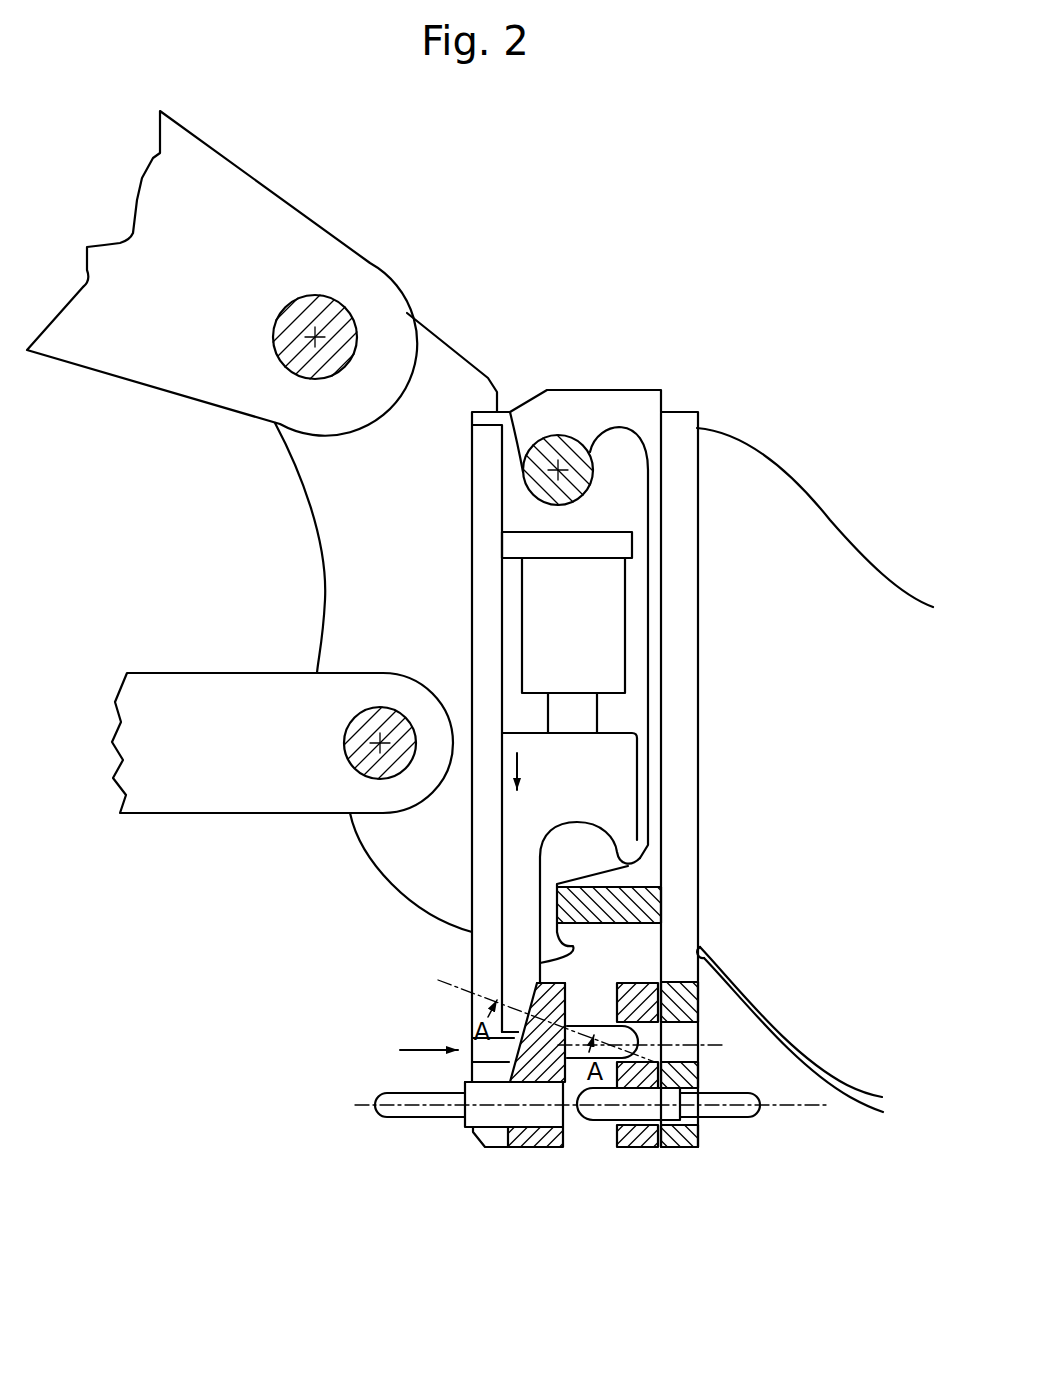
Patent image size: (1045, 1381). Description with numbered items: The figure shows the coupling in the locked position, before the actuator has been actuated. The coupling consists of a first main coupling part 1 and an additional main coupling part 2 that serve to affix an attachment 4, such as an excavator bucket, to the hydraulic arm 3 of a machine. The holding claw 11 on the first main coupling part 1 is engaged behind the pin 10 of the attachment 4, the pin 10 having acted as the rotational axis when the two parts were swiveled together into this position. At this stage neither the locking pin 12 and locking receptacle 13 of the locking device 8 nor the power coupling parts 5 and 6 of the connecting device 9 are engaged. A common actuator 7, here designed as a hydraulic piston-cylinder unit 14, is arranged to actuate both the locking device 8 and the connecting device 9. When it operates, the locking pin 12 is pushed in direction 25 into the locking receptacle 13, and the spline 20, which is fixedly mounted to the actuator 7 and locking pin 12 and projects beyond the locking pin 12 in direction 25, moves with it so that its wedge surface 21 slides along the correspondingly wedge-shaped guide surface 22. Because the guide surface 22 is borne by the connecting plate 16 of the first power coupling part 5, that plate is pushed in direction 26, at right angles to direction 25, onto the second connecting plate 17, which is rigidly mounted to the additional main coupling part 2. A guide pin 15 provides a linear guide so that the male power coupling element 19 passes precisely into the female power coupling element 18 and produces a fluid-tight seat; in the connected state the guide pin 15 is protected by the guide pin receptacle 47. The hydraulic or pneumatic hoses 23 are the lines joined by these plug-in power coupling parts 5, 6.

The first main coupling part 1 is at (480, 440).
The additional main coupling part 2 is at (650, 420).
The hydraulic arm 3 is at (357, 285).
The attachment 4 is at (845, 1047).
The first power coupling part 5 is at (487, 1158).
The second power coupling part 6 is at (643, 1152).
The actuator 7 is at (632, 610).
The locking device 8 is at (645, 748).
The connecting device 9 is at (518, 972).
The pin 10 is at (545, 448).
The holding claw 11 is at (617, 445).
The locking pin 12 is at (632, 852).
The locking receptacle 13 is at (628, 905).
The hydraulic piston-cylinder unit 14 is at (607, 597).
The guide pin 15 is at (575, 1052).
The connecting plate 16 is at (537, 1138).
The second connecting plate 17 is at (650, 1143).
The female power coupling element 18 is at (475, 1117).
The male power coupling element 19 is at (608, 1113).
The spline 20 is at (520, 947).
The wedge surface 21 is at (517, 1008).
The guide surface 22 is at (565, 990).
The hydraulic or pneumatic hoses 23 is at (417, 1118).
The direction 25 is at (512, 770).
The direction 26 is at (415, 1047).
The guide pin receptacle 47 is at (682, 1032).